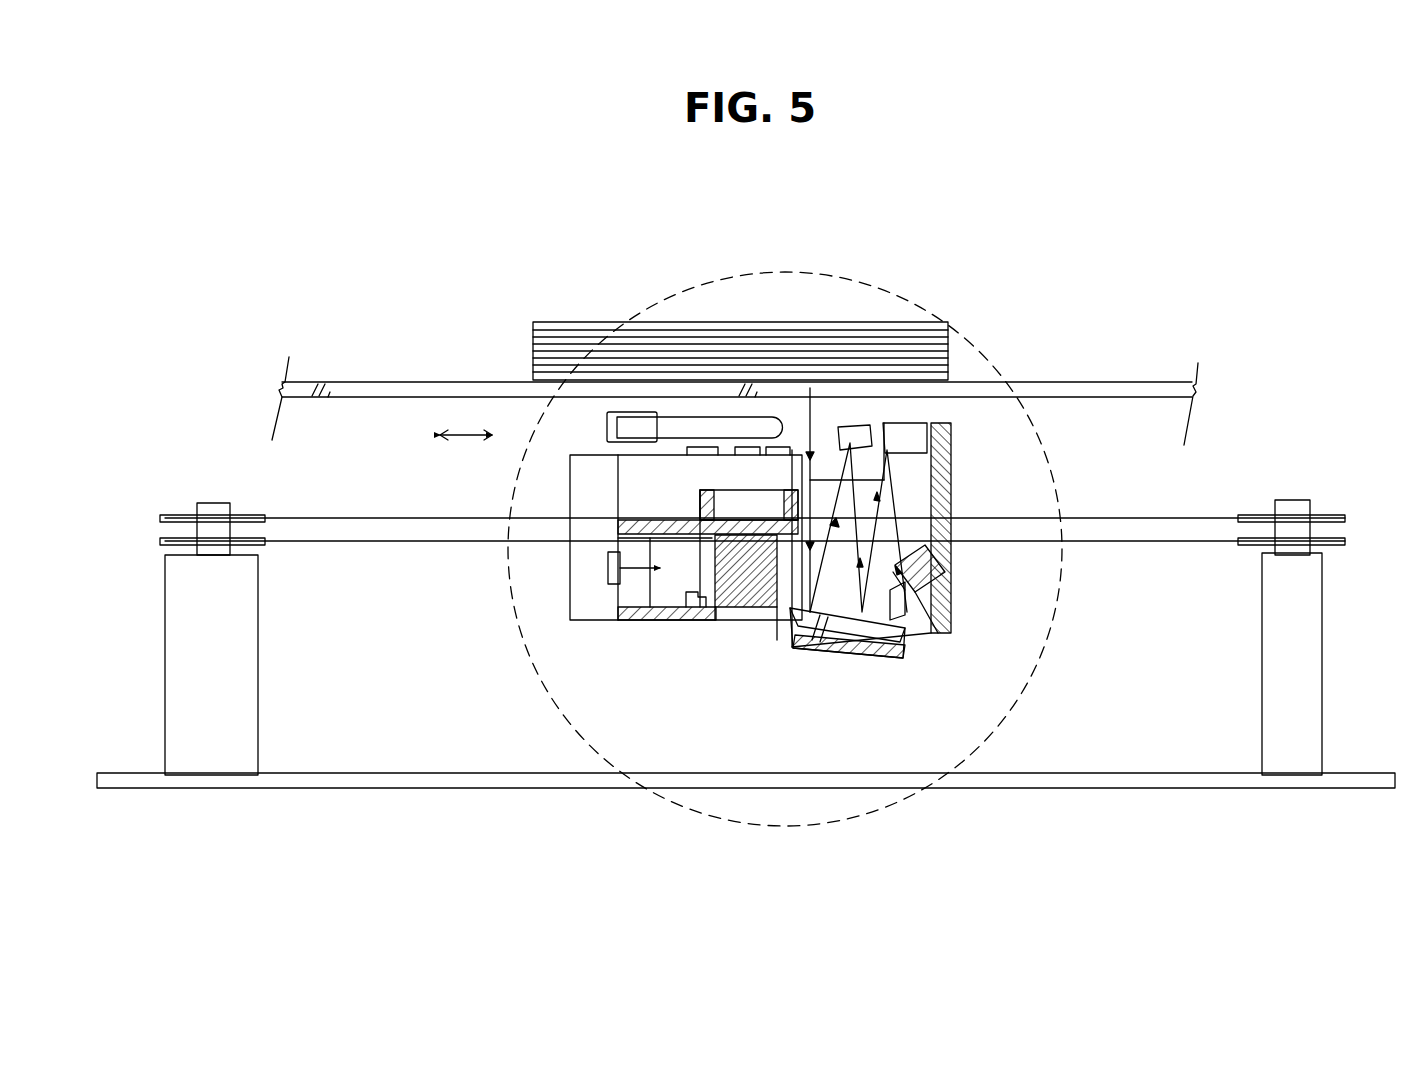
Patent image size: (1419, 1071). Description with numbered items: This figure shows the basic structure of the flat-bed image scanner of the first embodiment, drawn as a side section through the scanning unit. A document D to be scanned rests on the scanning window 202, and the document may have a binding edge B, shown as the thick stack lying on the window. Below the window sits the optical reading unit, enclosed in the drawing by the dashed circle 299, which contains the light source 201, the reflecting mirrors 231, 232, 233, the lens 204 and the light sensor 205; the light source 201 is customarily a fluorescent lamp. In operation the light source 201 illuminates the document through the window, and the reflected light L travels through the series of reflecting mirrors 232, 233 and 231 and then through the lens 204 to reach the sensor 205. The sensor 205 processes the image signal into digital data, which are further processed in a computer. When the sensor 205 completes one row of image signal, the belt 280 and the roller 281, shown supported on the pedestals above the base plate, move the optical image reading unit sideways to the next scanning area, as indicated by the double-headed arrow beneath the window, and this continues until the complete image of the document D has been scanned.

The scanning window 202 is at (1133, 386).
The binding edge B is at (650, 328).
The document D is at (584, 352).
The belt 280 is at (292, 522).
The roller 281 is at (184, 525).
The optical head unit region 299 is at (572, 725).
The light sensor 205 is at (620, 574).
The lens 204 is at (748, 612).
The light source 201 is at (690, 433).
The reflecting mirror 232 is at (893, 440).
The light beam L is at (895, 495).
The reflecting mirror 231 is at (848, 645).
The reflecting mirror 233 is at (930, 585).